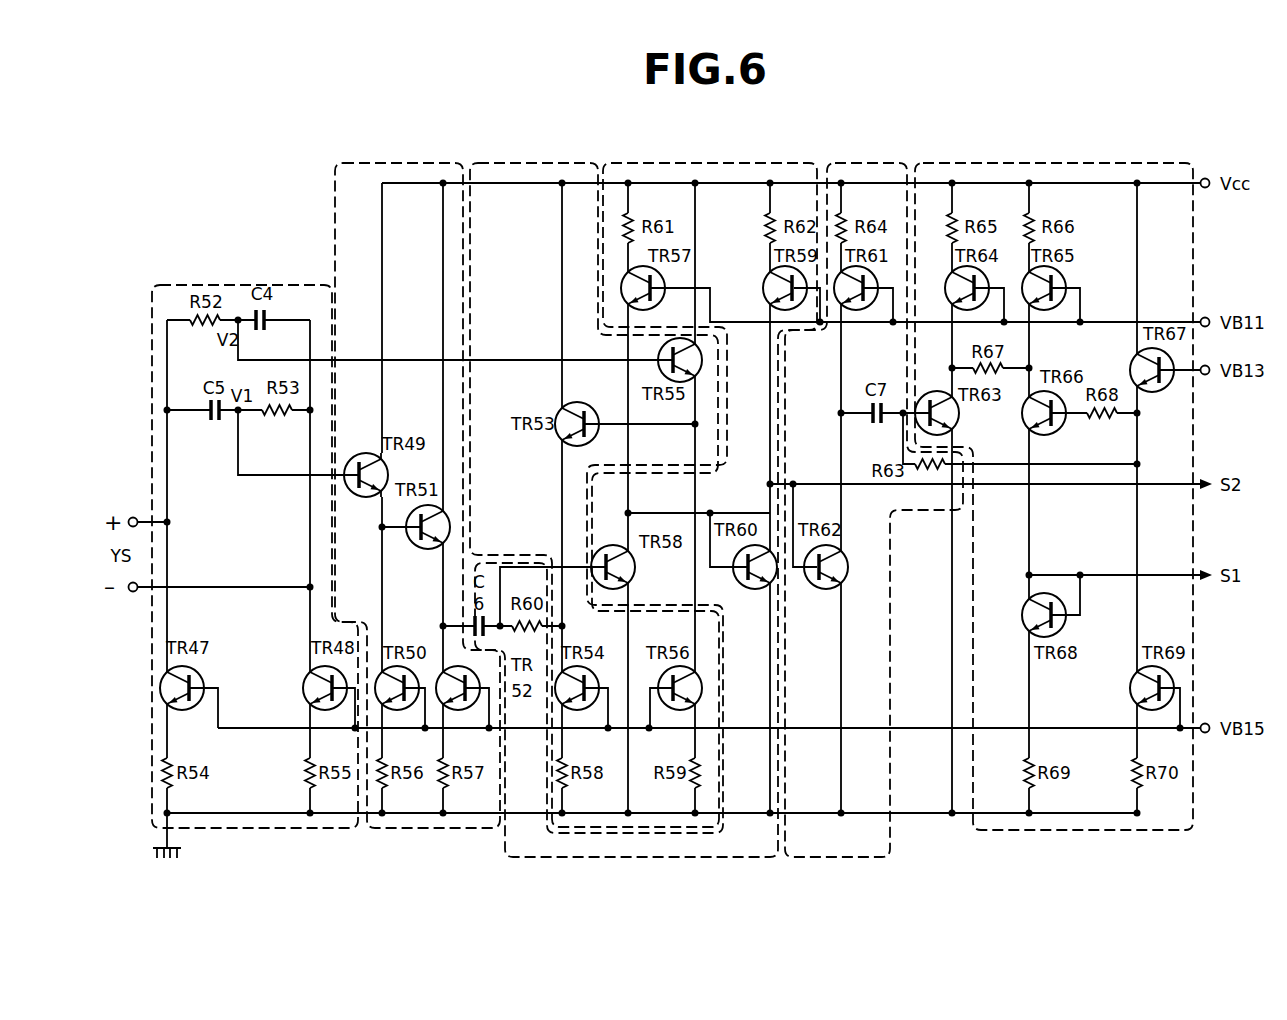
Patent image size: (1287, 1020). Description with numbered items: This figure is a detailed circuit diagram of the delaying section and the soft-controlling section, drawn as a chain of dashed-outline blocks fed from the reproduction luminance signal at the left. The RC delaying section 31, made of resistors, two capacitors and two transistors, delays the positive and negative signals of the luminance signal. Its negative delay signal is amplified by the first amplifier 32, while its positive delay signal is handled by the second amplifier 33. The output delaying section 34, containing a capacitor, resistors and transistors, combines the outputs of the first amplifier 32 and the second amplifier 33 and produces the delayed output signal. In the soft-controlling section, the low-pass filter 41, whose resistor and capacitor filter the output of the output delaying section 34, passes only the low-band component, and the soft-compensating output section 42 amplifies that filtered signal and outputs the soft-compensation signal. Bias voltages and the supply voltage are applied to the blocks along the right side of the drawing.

The RC delaying section 31 is at (232, 285).
The first amplifier 32 is at (402, 163).
The second amplifier 33 is at (532, 163).
The output delaying section 34 is at (702, 163).
The low-pass filter 41 is at (872, 163).
The soft-compensating output section 42 is at (1042, 163).